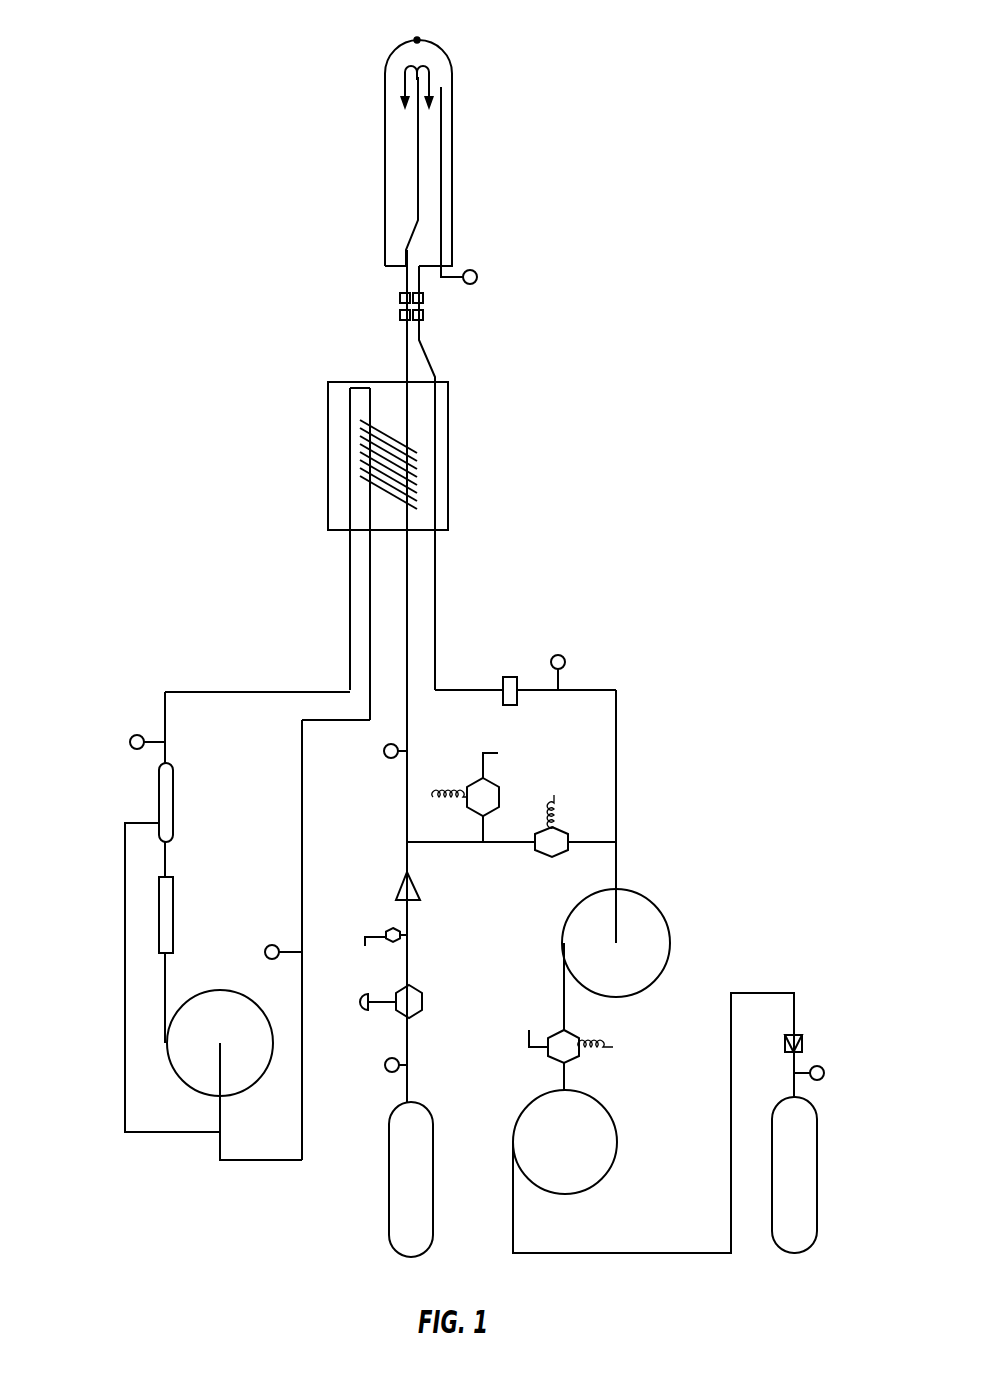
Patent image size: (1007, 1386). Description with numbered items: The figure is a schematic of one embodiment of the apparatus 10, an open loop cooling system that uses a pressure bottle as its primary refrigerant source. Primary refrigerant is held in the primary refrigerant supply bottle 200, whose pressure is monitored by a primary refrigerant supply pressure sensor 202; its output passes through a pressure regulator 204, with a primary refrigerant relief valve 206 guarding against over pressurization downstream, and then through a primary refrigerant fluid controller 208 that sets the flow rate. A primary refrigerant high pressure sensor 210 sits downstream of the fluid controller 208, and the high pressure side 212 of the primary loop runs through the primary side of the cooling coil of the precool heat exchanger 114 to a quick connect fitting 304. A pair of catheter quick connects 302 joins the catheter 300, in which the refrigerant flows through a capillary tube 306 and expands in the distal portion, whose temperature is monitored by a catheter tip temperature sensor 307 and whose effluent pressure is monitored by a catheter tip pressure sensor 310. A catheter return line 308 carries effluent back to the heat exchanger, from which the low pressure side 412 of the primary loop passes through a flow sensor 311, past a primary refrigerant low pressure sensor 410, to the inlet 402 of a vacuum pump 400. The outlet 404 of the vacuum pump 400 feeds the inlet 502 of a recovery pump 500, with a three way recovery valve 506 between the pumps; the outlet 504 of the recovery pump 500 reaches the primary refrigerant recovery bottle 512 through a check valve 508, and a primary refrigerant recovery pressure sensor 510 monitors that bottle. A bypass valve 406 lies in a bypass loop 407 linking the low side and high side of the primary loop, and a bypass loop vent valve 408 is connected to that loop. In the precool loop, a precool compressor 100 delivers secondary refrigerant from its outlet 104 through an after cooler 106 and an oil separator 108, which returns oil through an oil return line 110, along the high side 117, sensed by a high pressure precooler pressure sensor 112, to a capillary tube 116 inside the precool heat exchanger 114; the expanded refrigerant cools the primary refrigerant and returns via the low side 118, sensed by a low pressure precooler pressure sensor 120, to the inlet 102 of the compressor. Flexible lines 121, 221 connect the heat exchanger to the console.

The apparatus 10 is at (657, 521).
The precool compressor 100 is at (166, 1043).
The inlet of the precool compressor 102 is at (222, 1110).
The outlet of the precool compressor 104 is at (166, 992).
The after cooler 106 is at (173, 900).
The oil separator 108 is at (173, 800).
The oil return line 110 is at (125, 920).
The high pressure precooler pressure sensor 112 is at (130, 742).
The precool heat exchanger 114 is at (448, 452).
The capillary tube 116 is at (350, 437).
The high side of the precool loop 117 is at (257, 692).
The low side of the precool loop 118 is at (370, 572).
The low pressure precooler pressure sensor 120 is at (265, 952).
The flexible line 121 is at (370, 626).
The primary refrigerant supply bottle 200 is at (389, 1178).
The primary refrigerant supply pressure sensor 202 is at (385, 1065).
The pressure regulator 204 is at (423, 1002).
The primary refrigerant relief valve 206 is at (393, 927).
The primary refrigerant fluid controller 208 is at (421, 888).
The primary refrigerant high pressure sensor 210 is at (384, 752).
The high pressure side of the primary loop 212 is at (408, 572).
The flexible line 221 is at (408, 626).
The catheter 300 is at (452, 137).
The catheter quick connects 302 is at (400, 298).
The quick connect fitting 304 is at (400, 316).
The capillary tube 306 is at (418, 136).
The catheter tip temperature sensor 307 is at (417, 40).
The catheter return line 308 is at (422, 285).
The catheter tip pressure sensor 310 is at (478, 280).
The flow sensor 311 is at (510, 705).
The vacuum pump 400 is at (670, 943).
The inlet of the vacuum pump 402 is at (617, 870).
The outlet of the vacuum pump 404 is at (564, 972).
The bypass valve 406 is at (568, 830).
The bypass loop 407 is at (510, 845).
The bypass loop vent valve 408 is at (499, 795).
The primary refrigerant low pressure sensor 410 is at (558, 655).
The low pressure side of the primary loop 412 is at (453, 690).
The recovery pump 500 is at (617, 1142).
The inlet of the recovery pump 502 is at (566, 1075).
The outlet of the recovery pump 504 is at (513, 1222).
The recovery valve 506 is at (573, 1030).
The check valve 508 is at (802, 1043).
The primary refrigerant recovery pressure sensor 510 is at (824, 1073).
The primary refrigerant recovery bottle 512 is at (817, 1175).